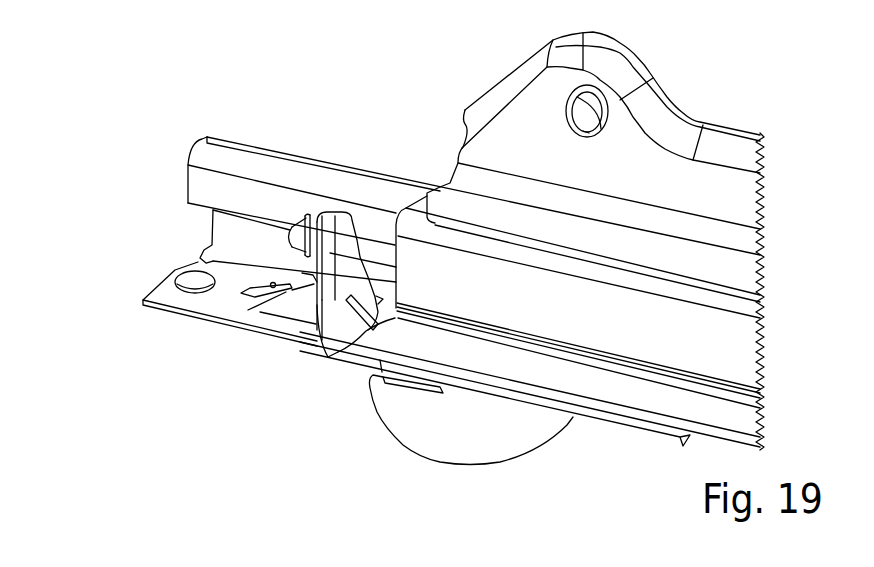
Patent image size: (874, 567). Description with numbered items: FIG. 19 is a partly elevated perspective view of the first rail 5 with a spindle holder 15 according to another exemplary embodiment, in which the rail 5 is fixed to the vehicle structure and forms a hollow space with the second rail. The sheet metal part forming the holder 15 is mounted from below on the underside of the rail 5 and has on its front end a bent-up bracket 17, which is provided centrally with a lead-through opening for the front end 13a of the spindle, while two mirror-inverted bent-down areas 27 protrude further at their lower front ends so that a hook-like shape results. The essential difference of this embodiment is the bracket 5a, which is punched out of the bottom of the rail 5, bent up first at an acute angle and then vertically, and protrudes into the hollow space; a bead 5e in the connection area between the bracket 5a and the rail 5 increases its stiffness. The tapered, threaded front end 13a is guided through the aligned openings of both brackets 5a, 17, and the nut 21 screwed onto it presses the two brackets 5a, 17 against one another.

The first rail 5 is at (235, 158).
The front end of the spindle 13a is at (307, 207).
The nut 21 is at (296, 230).
The bead 5e is at (256, 295).
The bracket 5a is at (293, 287).
The bent-up bracket 17 is at (342, 288).
The spindle holder 15 is at (353, 277).
The bent-down areas 27 is at (448, 443).